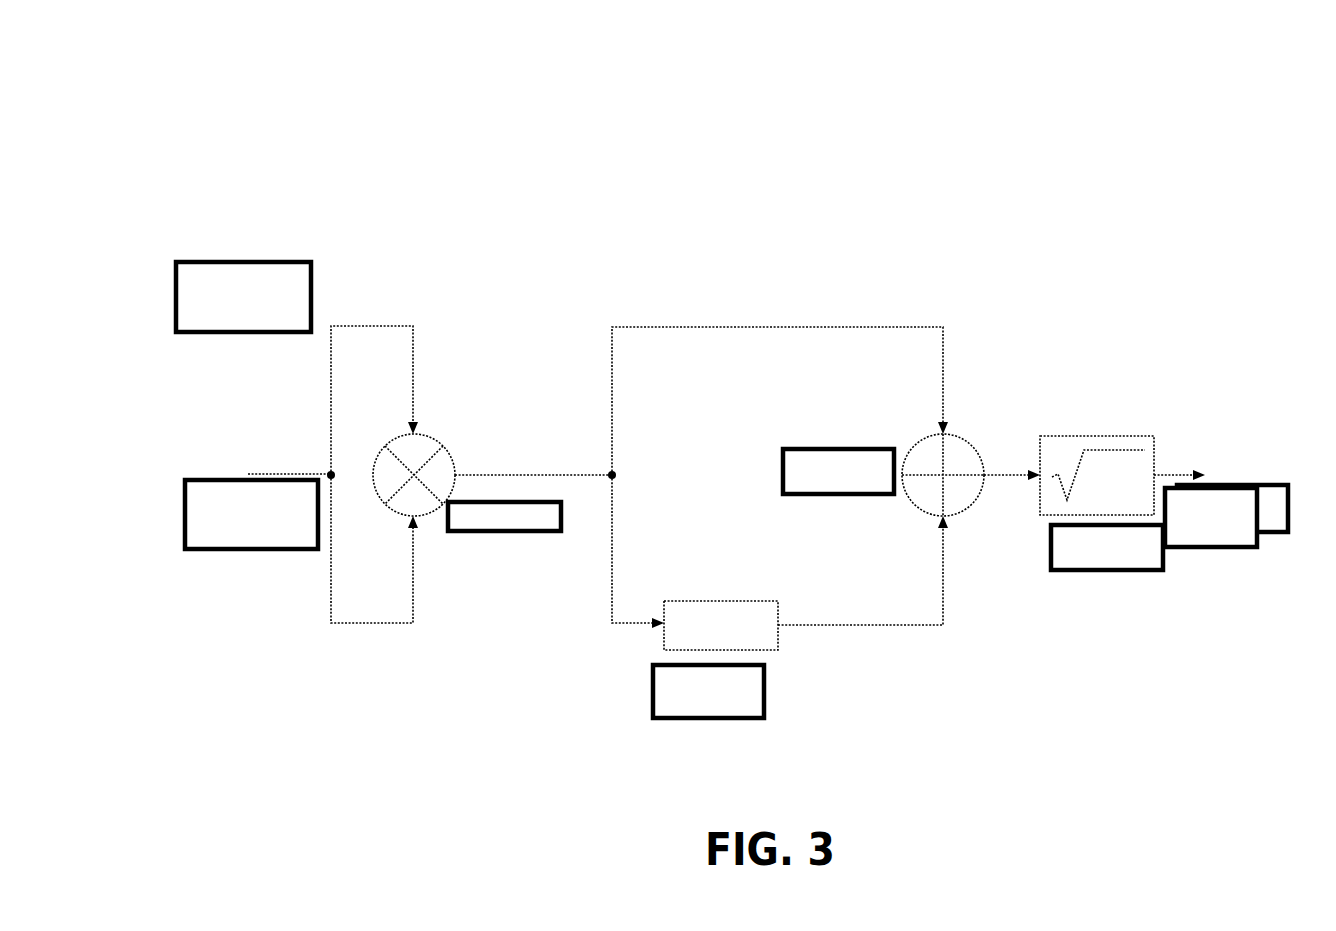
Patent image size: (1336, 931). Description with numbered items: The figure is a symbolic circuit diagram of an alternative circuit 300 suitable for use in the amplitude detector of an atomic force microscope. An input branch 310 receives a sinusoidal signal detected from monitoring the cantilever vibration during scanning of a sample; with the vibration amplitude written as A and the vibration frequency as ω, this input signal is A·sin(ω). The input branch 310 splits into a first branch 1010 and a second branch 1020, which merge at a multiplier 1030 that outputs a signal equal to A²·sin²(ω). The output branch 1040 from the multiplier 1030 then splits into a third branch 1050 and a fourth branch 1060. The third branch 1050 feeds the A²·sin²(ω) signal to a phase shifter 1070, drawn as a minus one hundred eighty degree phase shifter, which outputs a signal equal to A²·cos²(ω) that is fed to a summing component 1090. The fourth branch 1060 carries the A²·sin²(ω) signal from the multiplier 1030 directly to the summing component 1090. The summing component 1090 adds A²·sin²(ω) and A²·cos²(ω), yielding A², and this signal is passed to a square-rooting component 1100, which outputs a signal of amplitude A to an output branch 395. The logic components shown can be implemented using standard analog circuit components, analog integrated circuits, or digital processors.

The alternative circuit 300 is at (718, 108).
The input branch 310 is at (262, 484).
The output branch 395 is at (1205, 472).
The first branch 1010 is at (335, 628).
The second branch 1020 is at (355, 318).
The multiplier 1030 is at (437, 432).
The output branch 1040 is at (526, 481).
The third branch 1050 is at (615, 630).
The fourth branch 1060 is at (613, 318).
The phase shifter 1070 is at (746, 657).
The summing component 1090 is at (960, 430).
The square-rooting component 1100 is at (1103, 430).